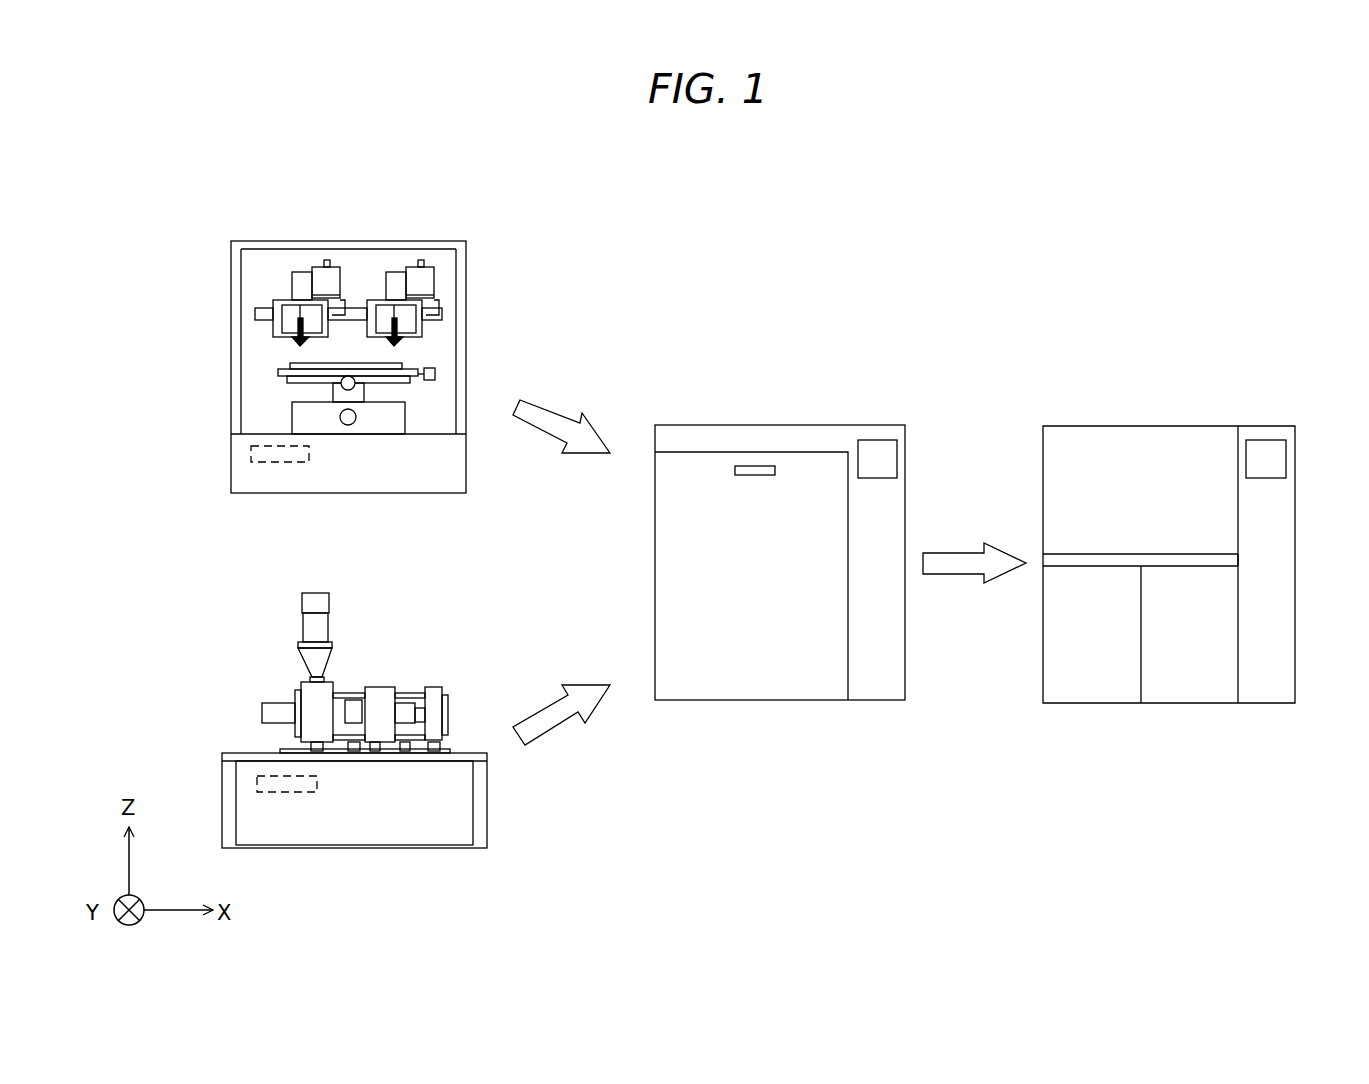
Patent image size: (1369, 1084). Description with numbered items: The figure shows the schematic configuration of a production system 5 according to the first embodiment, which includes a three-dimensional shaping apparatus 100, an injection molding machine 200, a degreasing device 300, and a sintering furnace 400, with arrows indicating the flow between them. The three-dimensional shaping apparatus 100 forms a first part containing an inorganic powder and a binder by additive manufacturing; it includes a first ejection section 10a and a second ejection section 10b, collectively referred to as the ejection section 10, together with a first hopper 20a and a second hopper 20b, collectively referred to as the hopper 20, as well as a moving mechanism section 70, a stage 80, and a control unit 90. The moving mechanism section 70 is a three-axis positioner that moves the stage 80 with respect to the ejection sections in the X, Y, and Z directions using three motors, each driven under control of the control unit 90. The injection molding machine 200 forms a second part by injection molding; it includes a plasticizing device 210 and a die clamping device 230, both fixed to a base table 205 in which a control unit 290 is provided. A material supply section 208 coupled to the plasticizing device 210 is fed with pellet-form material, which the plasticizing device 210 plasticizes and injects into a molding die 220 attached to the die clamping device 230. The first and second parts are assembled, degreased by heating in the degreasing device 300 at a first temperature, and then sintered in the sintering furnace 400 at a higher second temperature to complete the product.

The production system 5 is at (1142, 238).
The three-dimensional shaping apparatus 100 is at (180, 235).
The ejection section 10 is at (328, 278).
The first ejection section 10a is at (295, 258).
The second ejection section 10b is at (395, 258).
The hopper 20 is at (396, 234).
The first hopper 20a is at (325, 260).
The second hopper 20b is at (430, 260).
The moving mechanism section 70 is at (302, 402).
The stage 80 is at (402, 363).
The control unit 90 is at (250, 451).
The injection molding machine 200 is at (188, 627).
The base table 205 is at (222, 753).
The material supply section 208 is at (302, 630).
The plasticizing device 210 is at (272, 683).
The molding die 220 is at (352, 700).
The die clamping device 230 is at (414, 677).
The control unit 290 is at (257, 784).
The degreasing device 300 is at (820, 422).
The sintering furnace 400 is at (1210, 423).